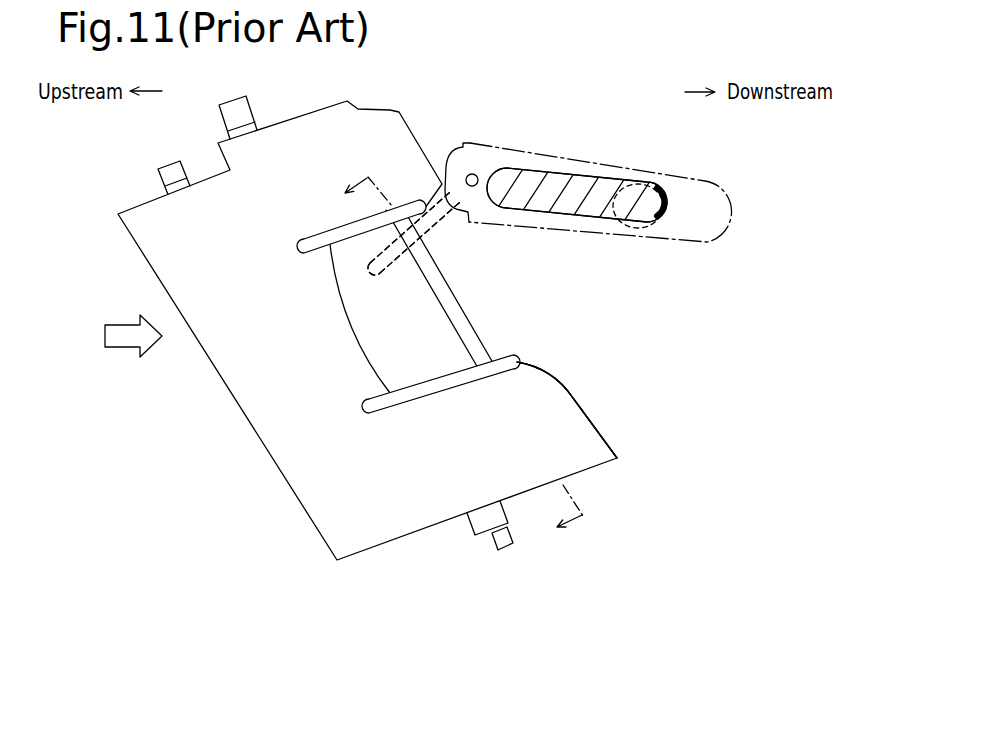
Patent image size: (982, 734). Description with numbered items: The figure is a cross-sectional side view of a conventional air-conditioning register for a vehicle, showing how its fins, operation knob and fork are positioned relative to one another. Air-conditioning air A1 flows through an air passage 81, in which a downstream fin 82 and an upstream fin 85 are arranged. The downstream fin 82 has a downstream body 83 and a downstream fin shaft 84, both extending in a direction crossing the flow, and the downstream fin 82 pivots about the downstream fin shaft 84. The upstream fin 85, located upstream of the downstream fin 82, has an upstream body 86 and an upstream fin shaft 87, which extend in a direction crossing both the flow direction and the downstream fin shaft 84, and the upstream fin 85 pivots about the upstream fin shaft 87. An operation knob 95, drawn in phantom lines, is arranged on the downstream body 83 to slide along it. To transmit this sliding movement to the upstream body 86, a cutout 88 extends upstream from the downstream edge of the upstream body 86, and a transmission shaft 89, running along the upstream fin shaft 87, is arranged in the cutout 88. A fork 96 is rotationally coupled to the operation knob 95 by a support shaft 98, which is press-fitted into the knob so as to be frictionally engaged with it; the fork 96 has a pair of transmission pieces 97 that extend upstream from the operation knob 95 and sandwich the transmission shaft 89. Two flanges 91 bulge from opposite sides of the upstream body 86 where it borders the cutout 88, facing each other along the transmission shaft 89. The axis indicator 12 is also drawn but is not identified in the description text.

The air passage 81 is at (231, 473).
The downstream fin 82 is at (583, 277).
The downstream body 83 is at (589, 213).
The downstream fin shaft 84 is at (632, 233).
The upstream fin 85 is at (567, 410).
The upstream body 86 is at (582, 422).
The upstream fin shaft 87 is at (237, 114).
The cutout 88 is at (350, 327).
The transmission shaft 89 is at (466, 322).
The flange 91 is at (308, 251).
The operation knob 95 is at (595, 160).
The fork 96 is at (414, 288).
The transmission piece 97 is at (387, 262).
The support shaft 98 is at (477, 173).
The axis 12 is at (448, 364).
The air-conditioning air A1 is at (122, 349).